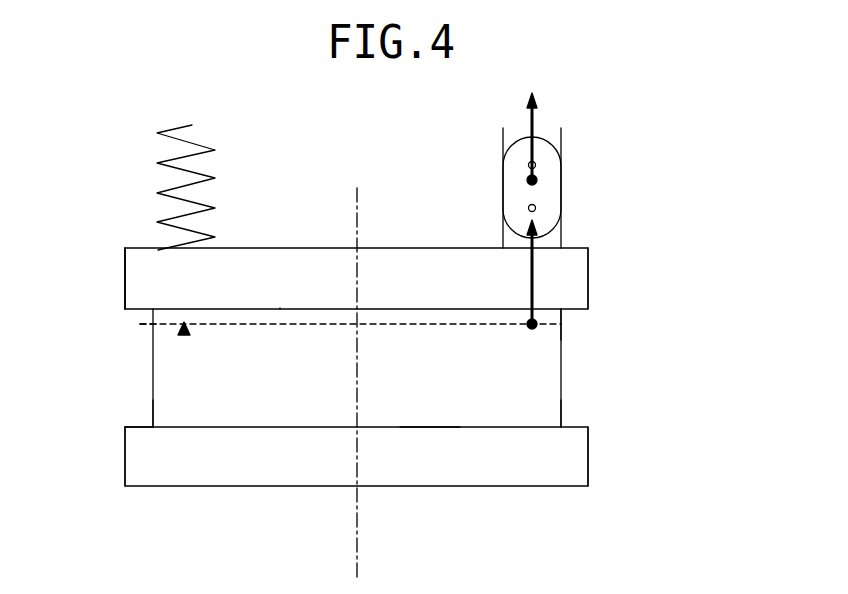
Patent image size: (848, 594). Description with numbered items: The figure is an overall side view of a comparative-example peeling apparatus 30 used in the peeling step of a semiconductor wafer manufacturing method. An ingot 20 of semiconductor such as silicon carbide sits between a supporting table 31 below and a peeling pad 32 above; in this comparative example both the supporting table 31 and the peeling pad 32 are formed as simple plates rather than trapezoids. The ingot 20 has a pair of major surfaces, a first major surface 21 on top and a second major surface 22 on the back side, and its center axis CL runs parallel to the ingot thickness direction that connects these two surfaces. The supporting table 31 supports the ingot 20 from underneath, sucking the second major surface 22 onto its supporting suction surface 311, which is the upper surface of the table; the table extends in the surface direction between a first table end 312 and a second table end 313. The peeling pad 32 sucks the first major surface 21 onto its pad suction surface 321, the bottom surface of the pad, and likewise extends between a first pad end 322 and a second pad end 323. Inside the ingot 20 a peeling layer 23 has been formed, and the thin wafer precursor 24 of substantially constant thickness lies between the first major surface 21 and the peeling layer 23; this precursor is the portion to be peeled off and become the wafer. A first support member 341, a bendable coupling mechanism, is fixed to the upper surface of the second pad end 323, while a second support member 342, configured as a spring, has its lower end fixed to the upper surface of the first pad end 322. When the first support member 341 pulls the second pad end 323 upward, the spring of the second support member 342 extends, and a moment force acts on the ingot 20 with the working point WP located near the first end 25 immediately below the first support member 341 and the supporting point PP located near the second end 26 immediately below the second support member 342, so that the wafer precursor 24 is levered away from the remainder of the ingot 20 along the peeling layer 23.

The peeling apparatus 30 is at (730, 230).
The peeling pad 32 is at (428, 262).
The supporting table 31 is at (272, 473).
The ingot 20 is at (162, 375).
The first major surface 21 is at (280, 308).
The second major surface 22 is at (430, 430).
The peeling layer 23 is at (150, 324).
The wafer precursor 24 is at (167, 317).
The first end 25 is at (561, 430).
The second end 26 is at (153, 432).
The supporting suction surface 311 is at (140, 425).
The first table end 312 is at (133, 477).
The second table end 313 is at (577, 478).
The pad suction surface 321 is at (572, 310).
The first pad end 322 is at (135, 283).
The second pad end 323 is at (578, 282).
The first support member 341 is at (552, 168).
The second support member 342 is at (157, 193).
The force point FP is at (529, 180).
The working point WP is at (532, 324).
The supporting point PP is at (184, 343).
The center axis CL is at (357, 565).